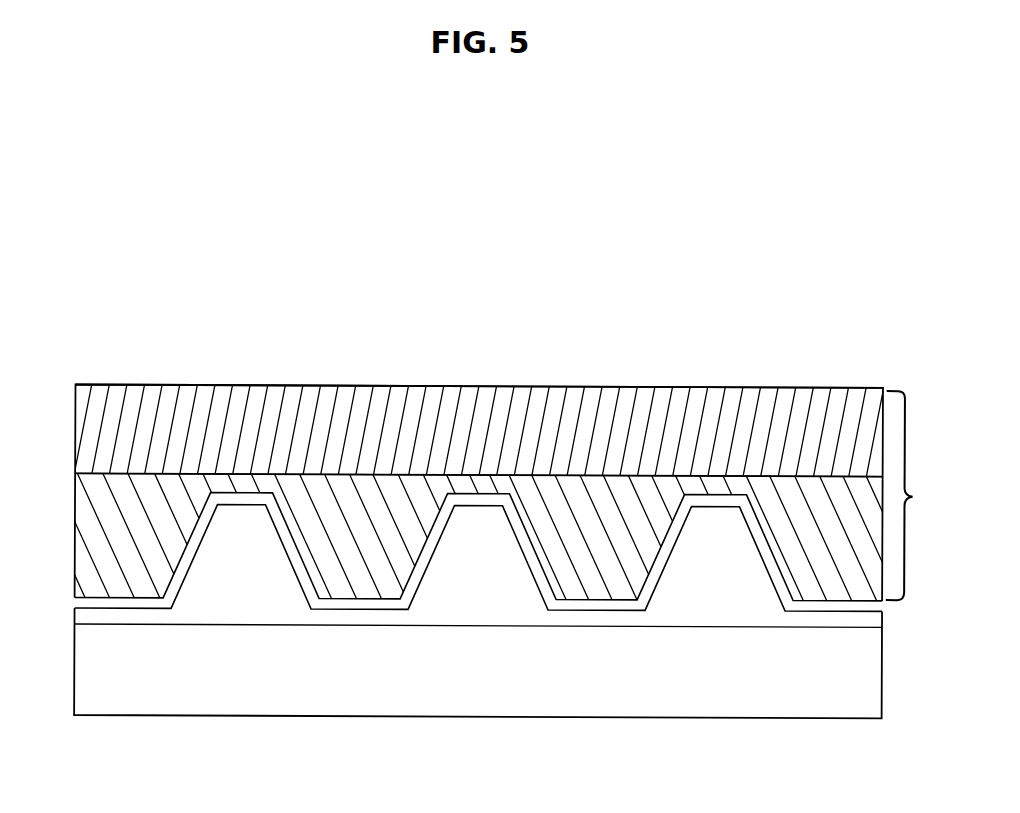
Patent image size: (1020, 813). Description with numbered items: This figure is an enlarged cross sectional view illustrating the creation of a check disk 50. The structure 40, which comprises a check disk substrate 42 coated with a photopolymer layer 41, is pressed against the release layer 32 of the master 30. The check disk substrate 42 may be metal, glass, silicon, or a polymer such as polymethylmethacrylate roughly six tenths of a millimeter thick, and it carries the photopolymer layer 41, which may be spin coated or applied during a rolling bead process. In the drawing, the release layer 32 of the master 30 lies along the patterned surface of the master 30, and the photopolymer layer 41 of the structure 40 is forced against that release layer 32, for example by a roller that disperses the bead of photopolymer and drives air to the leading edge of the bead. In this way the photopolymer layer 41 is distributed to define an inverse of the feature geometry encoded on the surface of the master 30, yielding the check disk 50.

The master 30 is at (52, 672).
The release layer 32 is at (92, 603).
The structure 40 is at (483, 343).
The photopolymer layer 41 is at (97, 558).
The check disk substrate 42 is at (115, 409).
The check disk 50 is at (913, 493).